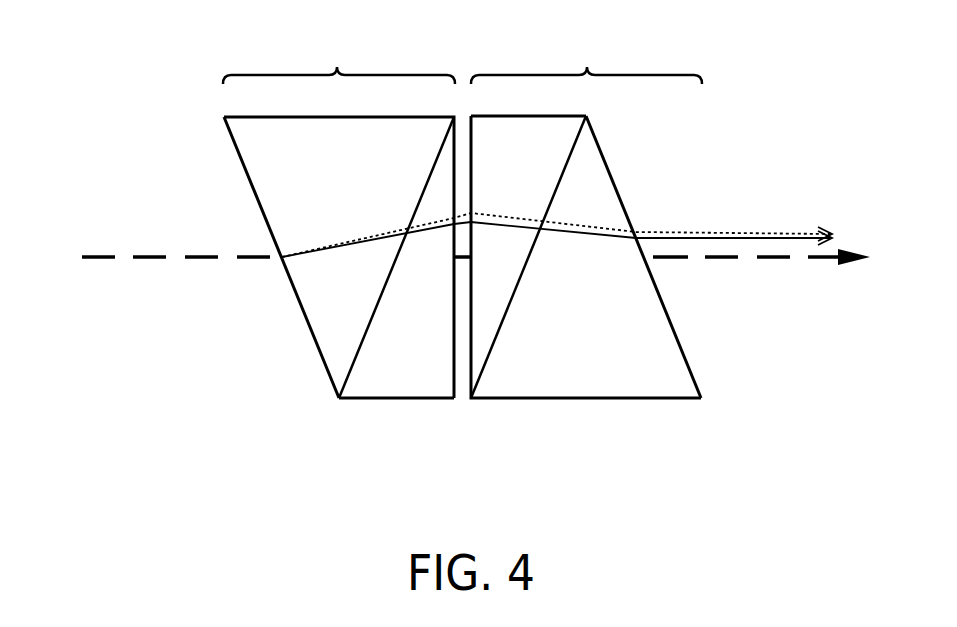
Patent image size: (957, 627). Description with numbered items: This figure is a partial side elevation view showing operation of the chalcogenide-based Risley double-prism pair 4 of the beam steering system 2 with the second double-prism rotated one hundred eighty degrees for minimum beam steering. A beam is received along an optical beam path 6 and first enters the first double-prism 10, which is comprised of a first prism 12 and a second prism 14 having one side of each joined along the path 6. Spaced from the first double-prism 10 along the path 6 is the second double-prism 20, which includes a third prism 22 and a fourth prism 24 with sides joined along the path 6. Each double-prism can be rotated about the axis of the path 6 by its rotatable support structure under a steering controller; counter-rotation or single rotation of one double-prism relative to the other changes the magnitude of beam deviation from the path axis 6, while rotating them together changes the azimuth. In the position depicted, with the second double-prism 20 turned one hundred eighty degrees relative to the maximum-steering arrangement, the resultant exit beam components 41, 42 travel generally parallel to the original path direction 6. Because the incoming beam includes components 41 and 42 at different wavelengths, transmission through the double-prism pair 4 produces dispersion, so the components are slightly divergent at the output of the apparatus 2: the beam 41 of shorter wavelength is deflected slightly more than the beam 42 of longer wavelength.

The beam steering system 2 is at (100, 60).
The Risley double-prism pair 4 is at (173, 113).
The optical beam path 6 is at (84, 258).
The first double-prism 10 is at (339, 238).
The first prism 12 is at (392, 398).
The second prism 14 is at (312, 337).
The second double-prism 20 is at (586, 219).
The third prism 22 is at (532, 116).
The fourth prism 24 is at (605, 160).
The beam component of shorter wavelength 41 is at (768, 233).
The beam component of longer wavelength 42 is at (748, 240).